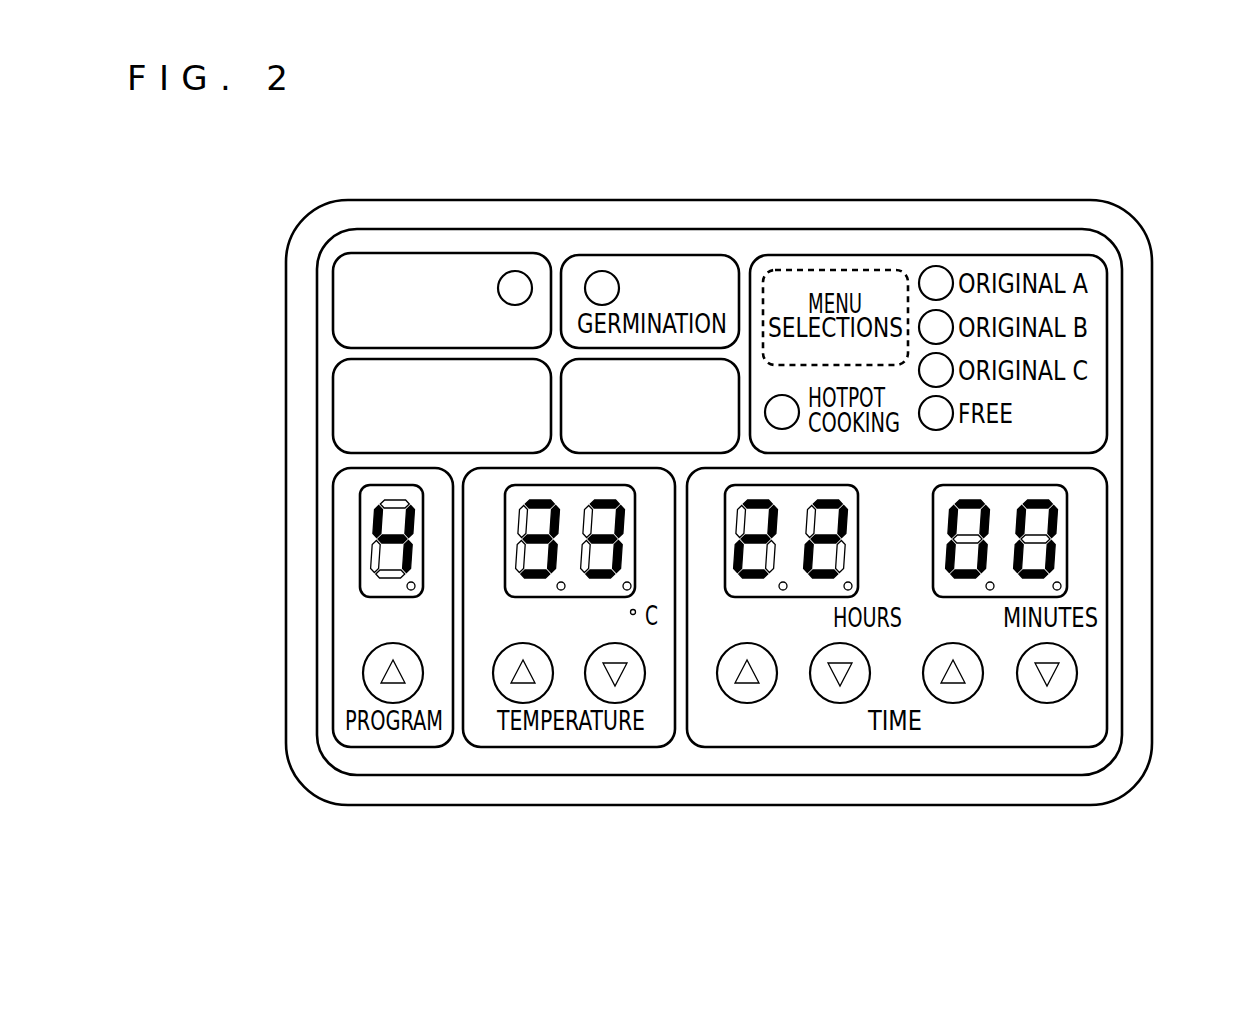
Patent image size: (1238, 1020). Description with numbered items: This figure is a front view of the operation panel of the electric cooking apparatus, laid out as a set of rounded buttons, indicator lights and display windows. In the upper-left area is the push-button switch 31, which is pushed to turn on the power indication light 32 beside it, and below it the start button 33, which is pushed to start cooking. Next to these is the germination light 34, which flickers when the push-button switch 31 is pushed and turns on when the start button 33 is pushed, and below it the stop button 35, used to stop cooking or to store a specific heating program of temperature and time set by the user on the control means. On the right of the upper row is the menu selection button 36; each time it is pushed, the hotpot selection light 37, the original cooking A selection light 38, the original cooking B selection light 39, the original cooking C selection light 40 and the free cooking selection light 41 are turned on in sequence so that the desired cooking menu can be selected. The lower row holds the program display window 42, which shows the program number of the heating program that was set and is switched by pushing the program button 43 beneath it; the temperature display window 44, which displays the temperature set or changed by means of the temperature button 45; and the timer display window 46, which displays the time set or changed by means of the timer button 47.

The push-button switch 31 is at (353, 298).
The power indication light 32 is at (515, 288).
The start button 33 is at (353, 408).
The germination light 34 is at (602, 288).
The stop button 35 is at (720, 378).
The menu selection button 36 is at (852, 275).
The hotpot selection light 37 is at (782, 412).
The original cooking A selection light 38 is at (936, 283).
The original cooking B selection light 39 is at (936, 327).
The original cooking C selection light 40 is at (936, 370).
The free cooking selection light 41 is at (936, 413).
The program display window 42 is at (388, 517).
The program button 43 is at (383, 677).
The temperature display window 44 is at (530, 558).
The temperature button 45 is at (502, 675).
The timer display window 46 is at (825, 558).
The timer button 47 is at (1047, 690).